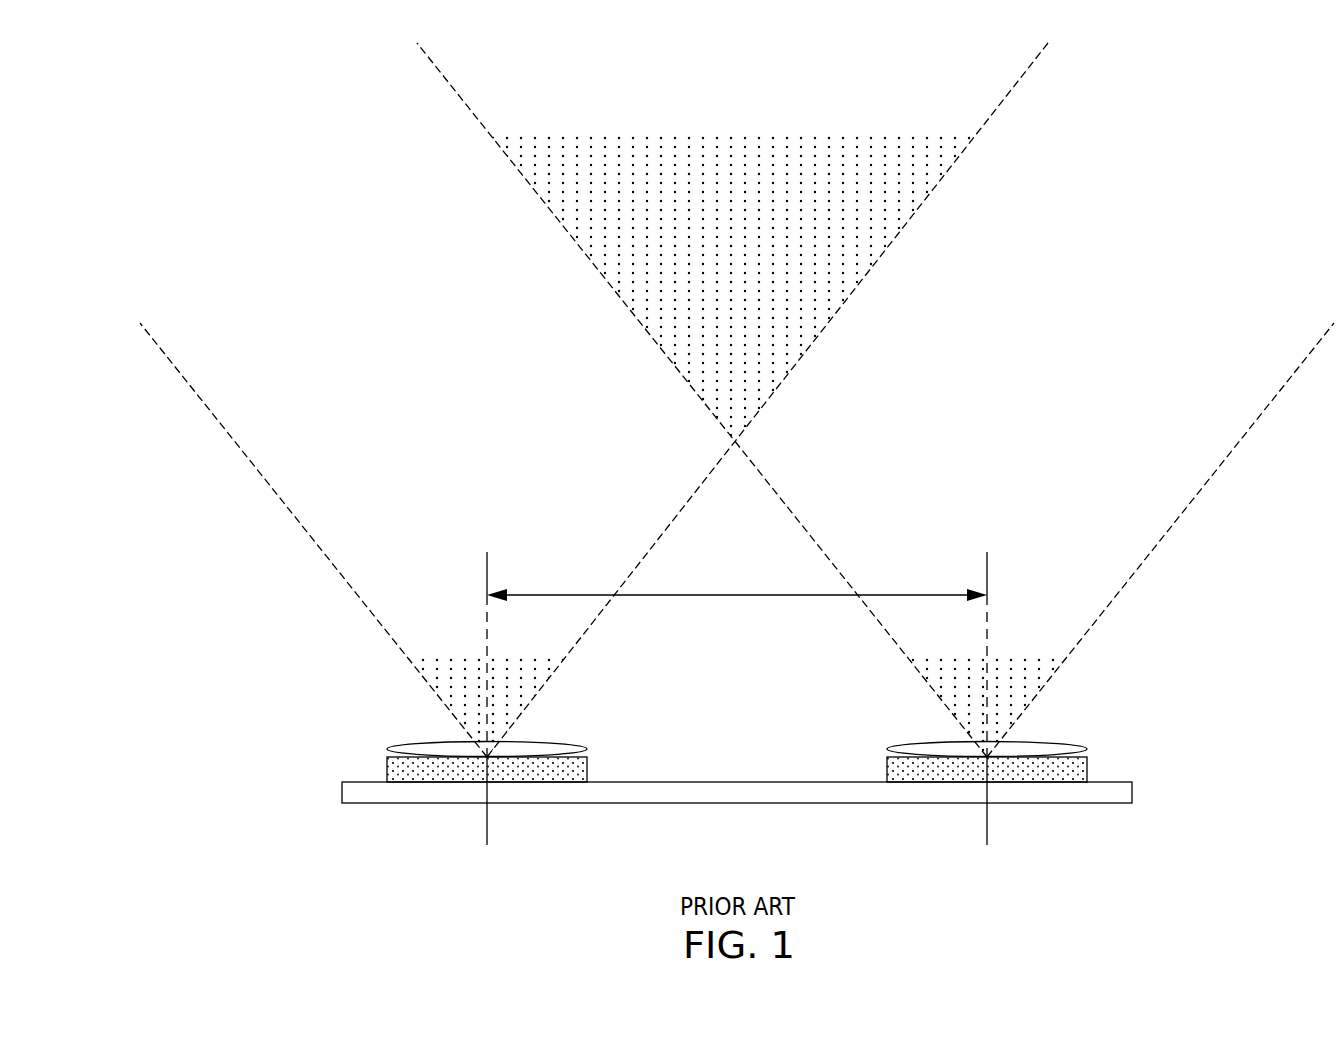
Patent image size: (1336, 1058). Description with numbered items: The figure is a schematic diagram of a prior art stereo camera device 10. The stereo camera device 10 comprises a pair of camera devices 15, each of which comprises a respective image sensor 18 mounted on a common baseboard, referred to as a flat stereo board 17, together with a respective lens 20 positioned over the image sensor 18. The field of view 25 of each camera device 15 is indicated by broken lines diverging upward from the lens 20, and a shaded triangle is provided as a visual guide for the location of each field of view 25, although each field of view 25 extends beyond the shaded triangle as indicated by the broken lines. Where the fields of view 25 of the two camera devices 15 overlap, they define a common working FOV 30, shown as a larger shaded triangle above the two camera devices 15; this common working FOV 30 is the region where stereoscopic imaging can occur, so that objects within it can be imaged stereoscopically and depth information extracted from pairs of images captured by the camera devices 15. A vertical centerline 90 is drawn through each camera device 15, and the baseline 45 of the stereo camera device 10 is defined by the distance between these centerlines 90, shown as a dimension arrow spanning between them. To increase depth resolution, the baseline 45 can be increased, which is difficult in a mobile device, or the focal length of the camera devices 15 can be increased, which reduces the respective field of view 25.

The stereo camera device 10 is at (1226, 175).
The camera device 15 is at (737, 738).
The flat stereo board 17 is at (736, 804).
The image sensor 18 is at (588, 776).
The lens 20 is at (578, 747).
The field of view 25 is at (527, 695).
The common working FOV 30 is at (751, 250).
The baseline 45 is at (752, 586).
The centerline 90 is at (487, 585).